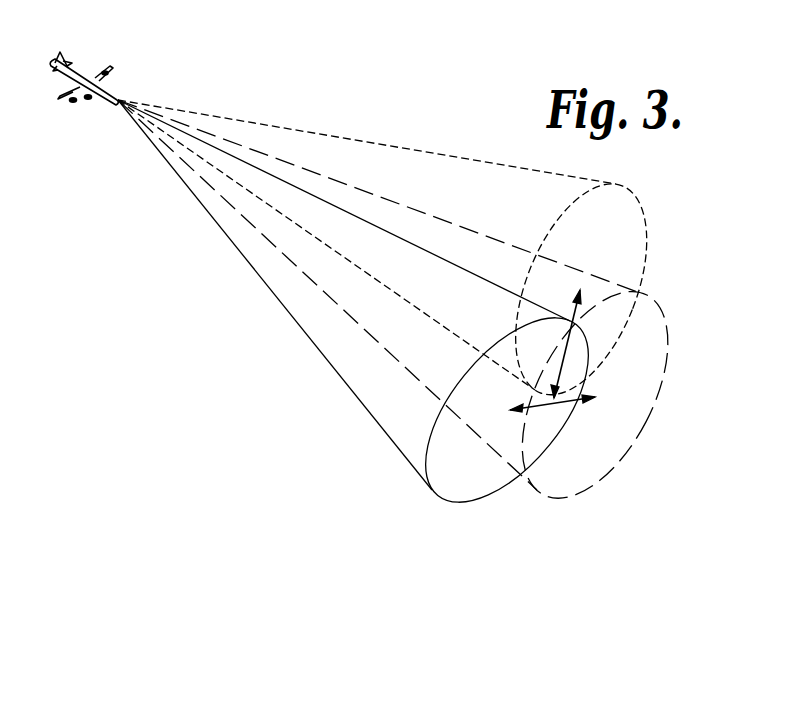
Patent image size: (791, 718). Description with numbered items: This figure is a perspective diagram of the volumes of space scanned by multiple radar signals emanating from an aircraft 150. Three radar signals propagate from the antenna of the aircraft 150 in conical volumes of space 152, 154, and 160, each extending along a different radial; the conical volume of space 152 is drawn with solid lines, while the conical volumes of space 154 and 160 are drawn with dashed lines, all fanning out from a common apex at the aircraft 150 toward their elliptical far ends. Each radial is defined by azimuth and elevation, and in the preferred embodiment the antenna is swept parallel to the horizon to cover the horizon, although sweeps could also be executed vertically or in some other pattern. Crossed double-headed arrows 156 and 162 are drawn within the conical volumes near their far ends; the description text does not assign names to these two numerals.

The aircraft 150 is at (82, 70).
The conical volume of space 152 is at (347, 383).
The conical volume of space 154 is at (668, 337).
The horizontal direction arrow 156 is at (555, 400).
The conical volume of space 160 is at (648, 220).
The vertical direction arrow 162 is at (563, 364).